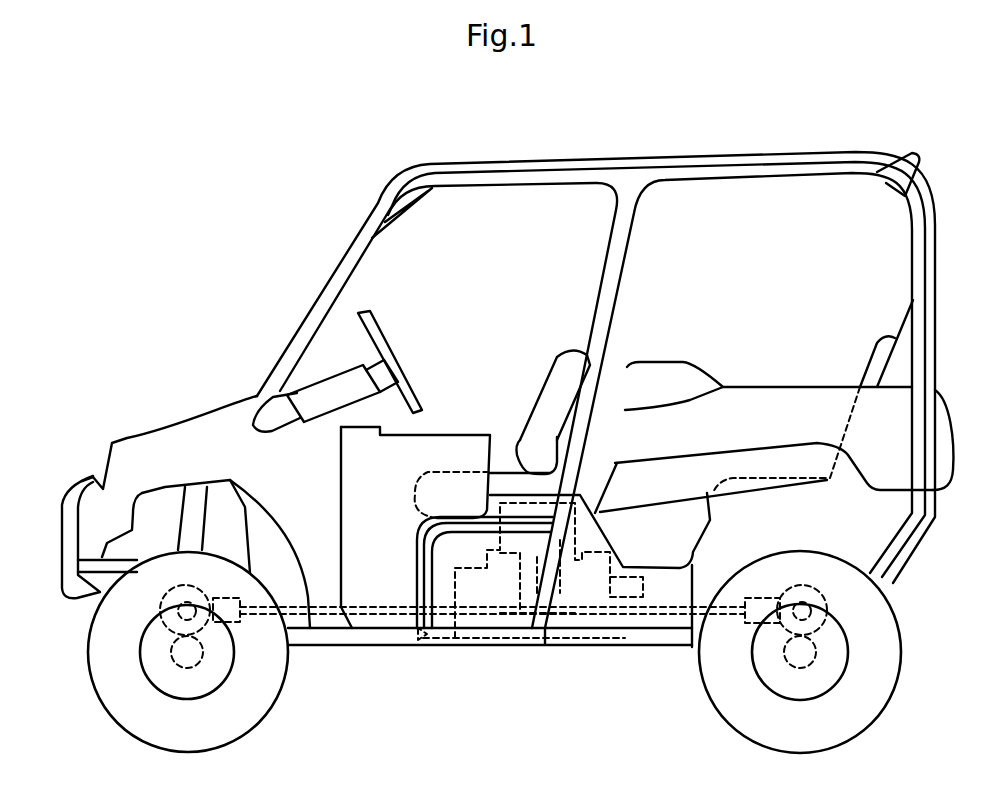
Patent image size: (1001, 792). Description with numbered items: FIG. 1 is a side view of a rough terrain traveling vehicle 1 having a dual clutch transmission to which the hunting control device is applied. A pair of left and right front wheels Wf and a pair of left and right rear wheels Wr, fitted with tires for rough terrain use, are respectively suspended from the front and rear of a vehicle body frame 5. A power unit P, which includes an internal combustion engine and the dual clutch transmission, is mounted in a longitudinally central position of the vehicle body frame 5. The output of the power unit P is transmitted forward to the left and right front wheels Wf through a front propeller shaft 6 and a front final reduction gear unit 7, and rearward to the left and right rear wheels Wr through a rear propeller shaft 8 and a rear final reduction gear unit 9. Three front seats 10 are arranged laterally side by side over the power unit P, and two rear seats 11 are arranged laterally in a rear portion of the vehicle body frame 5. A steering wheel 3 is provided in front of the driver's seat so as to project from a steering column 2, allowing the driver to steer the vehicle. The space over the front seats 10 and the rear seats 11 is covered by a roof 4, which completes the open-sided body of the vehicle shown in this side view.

The rough terrain traveling vehicle 1 is at (315, 257).
The steering column 2 is at (343, 368).
The steering wheel 3 is at (388, 343).
The roof 4 is at (675, 153).
The vehicle body frame 5 is at (498, 653).
The front propeller shaft 6 is at (333, 613).
The front final reduction gear unit 7 is at (213, 620).
The rear propeller shaft 8 is at (657, 613).
The rear final reduction gear unit 9 is at (778, 622).
The front seats 10 is at (453, 467).
The rear seats 11 is at (767, 477).
The power unit P is at (522, 647).
The front wheels Wf is at (102, 707).
The rear wheels Wr is at (893, 698).